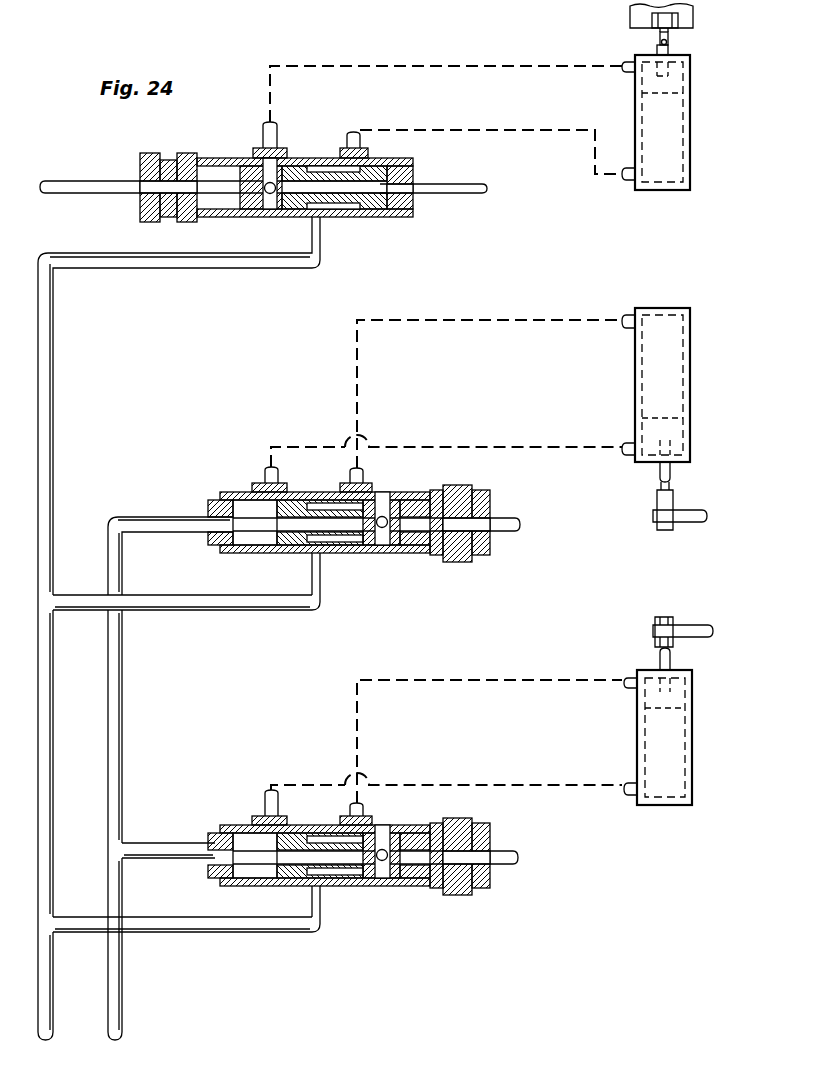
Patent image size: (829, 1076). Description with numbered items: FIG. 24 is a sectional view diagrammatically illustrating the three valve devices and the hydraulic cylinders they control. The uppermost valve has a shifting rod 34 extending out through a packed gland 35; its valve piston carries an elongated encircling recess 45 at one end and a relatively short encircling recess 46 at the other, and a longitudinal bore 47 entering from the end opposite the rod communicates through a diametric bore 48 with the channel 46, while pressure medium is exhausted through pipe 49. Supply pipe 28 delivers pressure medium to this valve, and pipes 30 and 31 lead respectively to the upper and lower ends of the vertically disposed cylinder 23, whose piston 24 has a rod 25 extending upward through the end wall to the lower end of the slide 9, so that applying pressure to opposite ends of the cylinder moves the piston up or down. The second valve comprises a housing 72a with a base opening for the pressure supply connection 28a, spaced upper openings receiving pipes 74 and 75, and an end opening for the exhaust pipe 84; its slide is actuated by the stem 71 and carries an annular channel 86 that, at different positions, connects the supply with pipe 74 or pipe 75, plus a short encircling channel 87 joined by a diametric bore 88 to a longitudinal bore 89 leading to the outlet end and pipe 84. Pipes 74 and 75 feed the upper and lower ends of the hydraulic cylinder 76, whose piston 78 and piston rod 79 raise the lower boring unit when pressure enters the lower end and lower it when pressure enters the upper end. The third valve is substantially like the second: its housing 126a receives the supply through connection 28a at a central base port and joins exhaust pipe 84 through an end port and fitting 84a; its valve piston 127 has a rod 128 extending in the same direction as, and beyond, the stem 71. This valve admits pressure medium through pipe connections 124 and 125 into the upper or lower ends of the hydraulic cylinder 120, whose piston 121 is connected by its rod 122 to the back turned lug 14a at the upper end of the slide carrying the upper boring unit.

The slide 9 is at (630, 14).
The back turned lug 14a is at (700, 637).
The cylinder 23 is at (676, 148).
The piston 24 is at (690, 100).
The rod 25 is at (672, 42).
The supply pipe 28 is at (197, 268).
The pressure supply pipe connection 28a is at (174, 610).
The pipe 30 is at (468, 66).
The pipe 31 is at (474, 130).
The shifting rod 34 is at (73, 185).
The packed gland 35 is at (142, 210).
The elongated encircling recess 45 is at (336, 220).
The short encircling recess 46 is at (258, 160).
The longitudinal bore 47 is at (372, 218).
The diametric bore 48 is at (270, 208).
The pipe 49 is at (462, 196).
The stem 71 is at (508, 532).
The housing 72a is at (368, 556).
The pipe 74 is at (470, 322).
The pipe 75 is at (502, 447).
The hydraulic cylinder 76 is at (676, 405).
The piston 78 is at (692, 450).
The piston rod 79 is at (672, 482).
The exhaust pipe 84 is at (157, 517).
The fitting 84a is at (266, 932).
The annular channel 86 is at (326, 560).
The short encircling channel 87 is at (404, 552).
The diametric bore 88 is at (390, 502).
The longitudinal bore 89 is at (296, 528).
The hydraulic cylinder 120 is at (676, 723).
The piston 121 is at (694, 700).
The rod 122 is at (658, 655).
The pipe connection 124 is at (362, 748).
The pipe connection 125 is at (446, 788).
The valve housing 126a is at (381, 886).
The valve piston 127 is at (342, 886).
The rod 128 is at (514, 848).